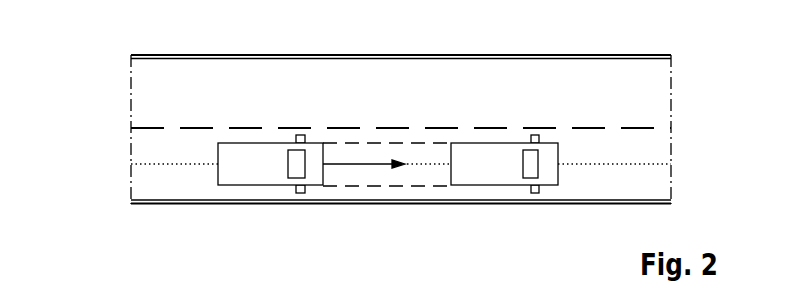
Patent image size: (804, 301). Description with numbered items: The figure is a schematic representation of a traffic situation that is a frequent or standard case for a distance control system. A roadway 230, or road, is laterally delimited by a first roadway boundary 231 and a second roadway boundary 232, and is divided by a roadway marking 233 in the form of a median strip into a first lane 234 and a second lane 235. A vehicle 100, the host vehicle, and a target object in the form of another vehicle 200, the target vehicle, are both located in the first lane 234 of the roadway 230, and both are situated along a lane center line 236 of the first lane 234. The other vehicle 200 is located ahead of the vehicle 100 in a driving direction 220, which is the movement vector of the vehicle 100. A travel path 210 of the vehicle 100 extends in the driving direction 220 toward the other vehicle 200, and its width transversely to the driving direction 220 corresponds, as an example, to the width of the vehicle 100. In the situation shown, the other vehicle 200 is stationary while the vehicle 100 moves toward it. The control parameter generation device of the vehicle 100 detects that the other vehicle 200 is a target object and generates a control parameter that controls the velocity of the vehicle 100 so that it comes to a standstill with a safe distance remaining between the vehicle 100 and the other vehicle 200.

The vehicle 100 is at (268, 177).
The other vehicle 200 is at (503, 177).
The travel path 210 is at (405, 186).
The driving direction 220 is at (352, 165).
The roadway 230 is at (675, 58).
The first roadway boundary 231 is at (203, 205).
The second roadway boundary 232 is at (205, 55).
The roadway marking 233 is at (158, 128).
The first lane 234 is at (125, 131).
The second lane 235 is at (125, 62).
The lane center line 236 is at (155, 164).